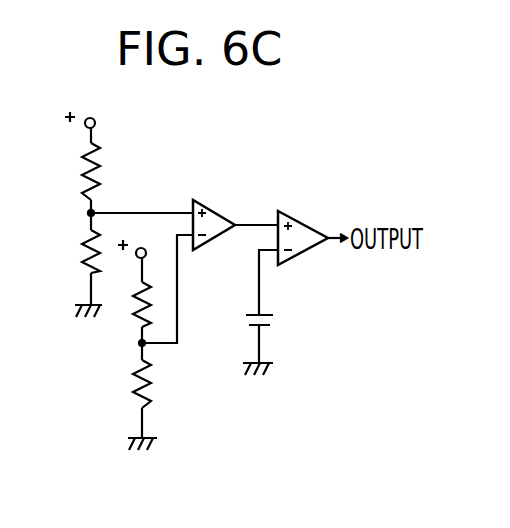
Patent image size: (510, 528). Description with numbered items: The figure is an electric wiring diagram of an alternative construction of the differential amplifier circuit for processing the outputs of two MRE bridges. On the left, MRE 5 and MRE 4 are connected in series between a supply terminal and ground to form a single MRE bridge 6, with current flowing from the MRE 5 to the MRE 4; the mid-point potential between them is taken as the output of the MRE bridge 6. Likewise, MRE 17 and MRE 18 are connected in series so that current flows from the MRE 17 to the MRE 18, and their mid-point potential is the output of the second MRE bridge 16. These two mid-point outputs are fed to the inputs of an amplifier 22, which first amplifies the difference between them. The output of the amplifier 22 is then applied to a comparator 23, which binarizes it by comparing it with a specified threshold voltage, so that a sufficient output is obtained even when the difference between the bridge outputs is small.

The MRE 4 is at (86, 242).
The MRE 5 is at (86, 179).
The MRE bridge 6 is at (45, 162).
The MRE bridge 16 is at (72, 325).
The MRE 17 is at (138, 319).
The MRE 18 is at (138, 394).
The amplifier 22 is at (222, 214).
The comparator 23 is at (311, 224).